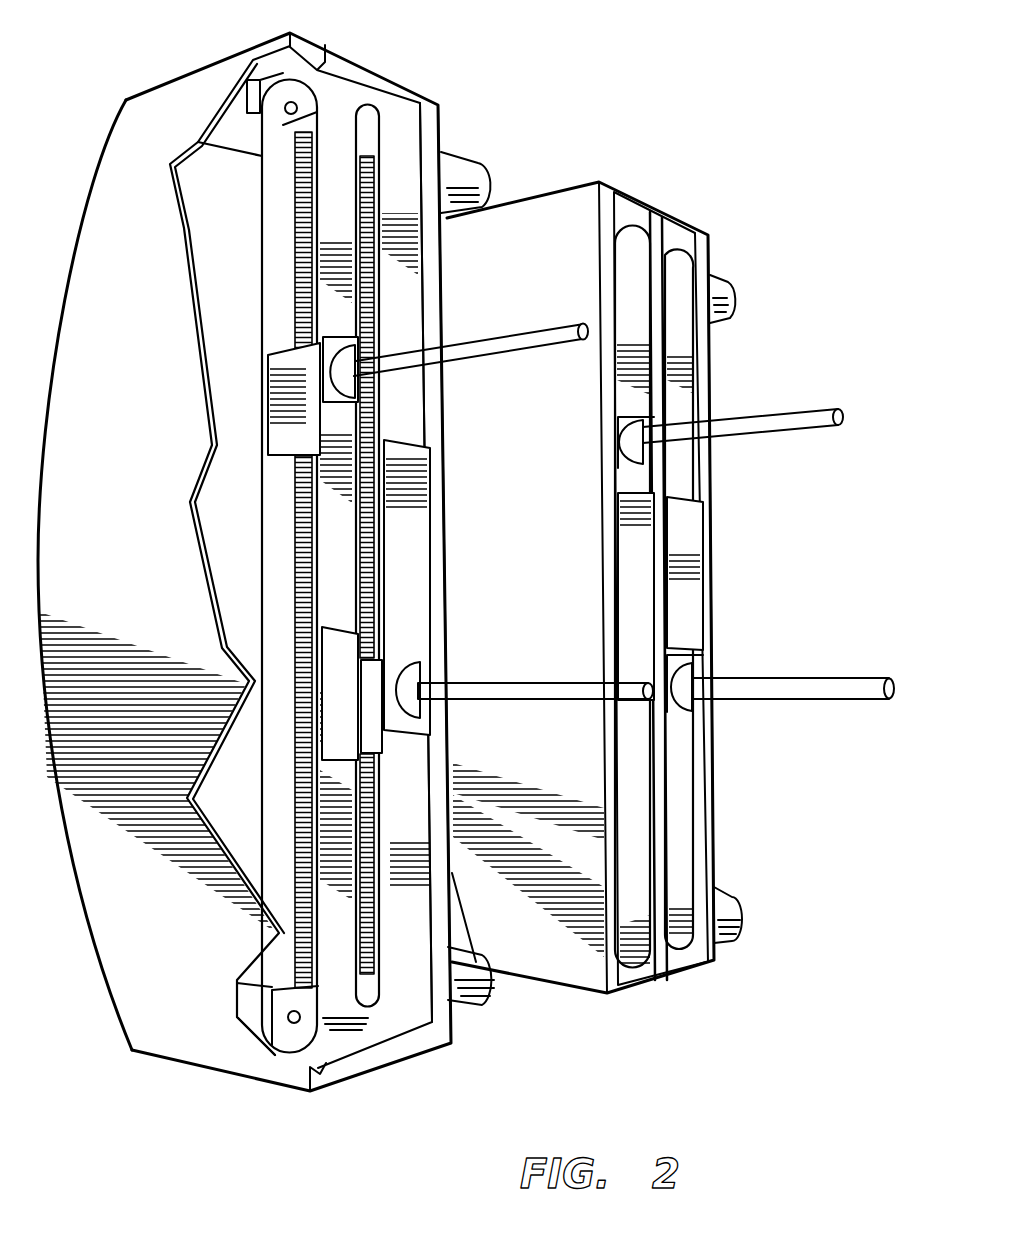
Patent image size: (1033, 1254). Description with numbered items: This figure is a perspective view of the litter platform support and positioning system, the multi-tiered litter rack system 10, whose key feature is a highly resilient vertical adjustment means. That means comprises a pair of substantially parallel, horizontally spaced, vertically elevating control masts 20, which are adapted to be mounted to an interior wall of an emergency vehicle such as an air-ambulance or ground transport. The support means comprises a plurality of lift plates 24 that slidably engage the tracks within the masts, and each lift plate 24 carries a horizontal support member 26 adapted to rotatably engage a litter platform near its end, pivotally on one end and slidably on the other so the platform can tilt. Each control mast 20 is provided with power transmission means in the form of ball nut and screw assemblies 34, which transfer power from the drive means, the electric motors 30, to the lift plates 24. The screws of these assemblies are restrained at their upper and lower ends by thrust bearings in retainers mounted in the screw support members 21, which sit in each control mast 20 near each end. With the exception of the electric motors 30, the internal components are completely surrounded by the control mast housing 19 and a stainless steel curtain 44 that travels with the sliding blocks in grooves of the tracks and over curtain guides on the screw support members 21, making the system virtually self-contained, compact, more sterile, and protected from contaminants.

The multi-tiered litter rack system 10 is at (420, 88).
The control mast housing 19 is at (90, 198).
The control mast 20 is at (300, 50).
The screw support member 21 is at (280, 100).
The lift plate 24 is at (341, 541).
The horizontal support member 26 is at (495, 345).
The electric motor 30 is at (475, 158).
The ball nut and screw assembly 34 is at (296, 288).
The stainless steel curtain 44 is at (258, 234).